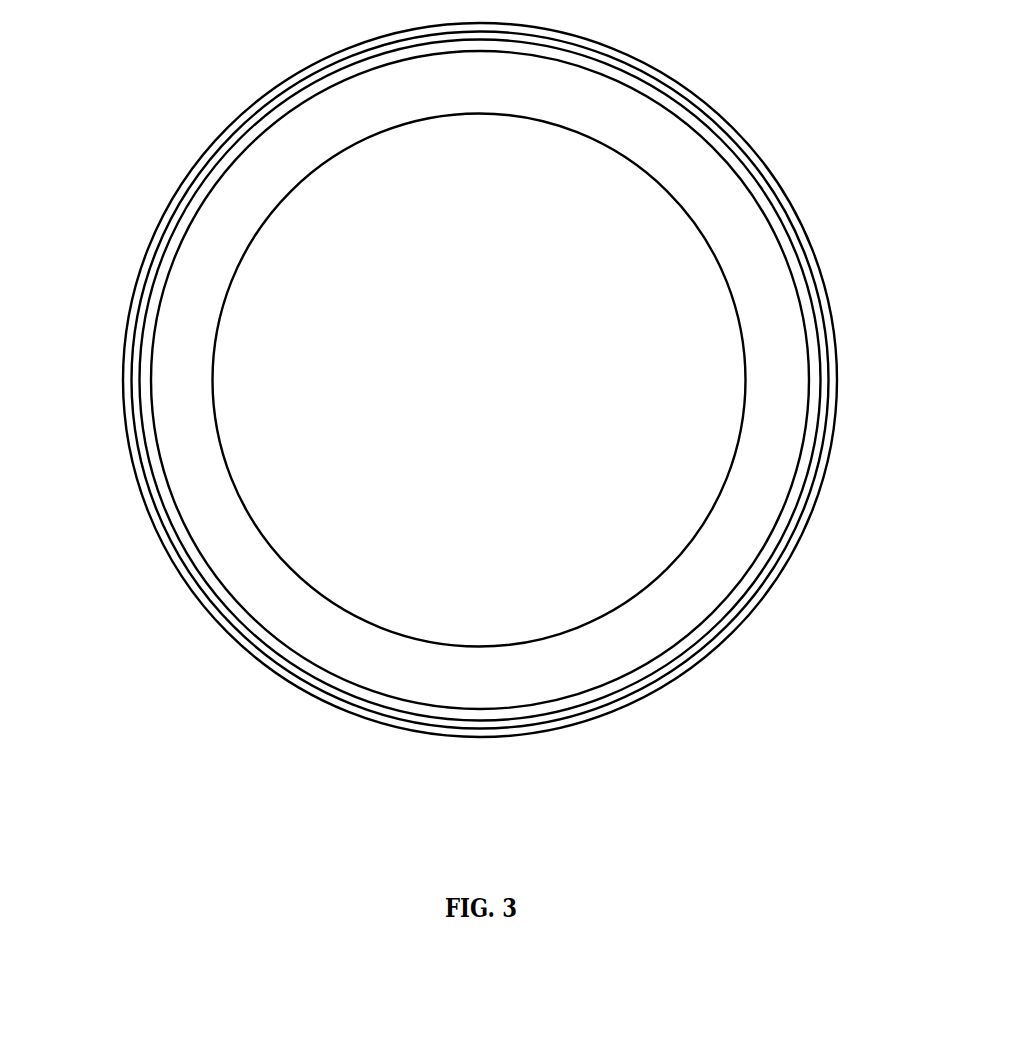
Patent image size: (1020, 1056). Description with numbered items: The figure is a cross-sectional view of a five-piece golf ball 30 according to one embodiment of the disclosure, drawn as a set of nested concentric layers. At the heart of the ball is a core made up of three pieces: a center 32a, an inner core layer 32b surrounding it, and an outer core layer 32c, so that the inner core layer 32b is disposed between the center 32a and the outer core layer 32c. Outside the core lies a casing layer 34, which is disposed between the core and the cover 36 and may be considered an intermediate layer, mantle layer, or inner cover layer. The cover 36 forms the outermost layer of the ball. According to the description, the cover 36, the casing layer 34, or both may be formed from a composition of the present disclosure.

The five-piece golf ball 30 is at (138, 161).
The center 32a is at (750, 442).
The inner core layer 32b is at (233, 609).
The outer core layer 32c is at (813, 482).
The casing layer 34 is at (732, 631).
The cover 36 is at (620, 718).